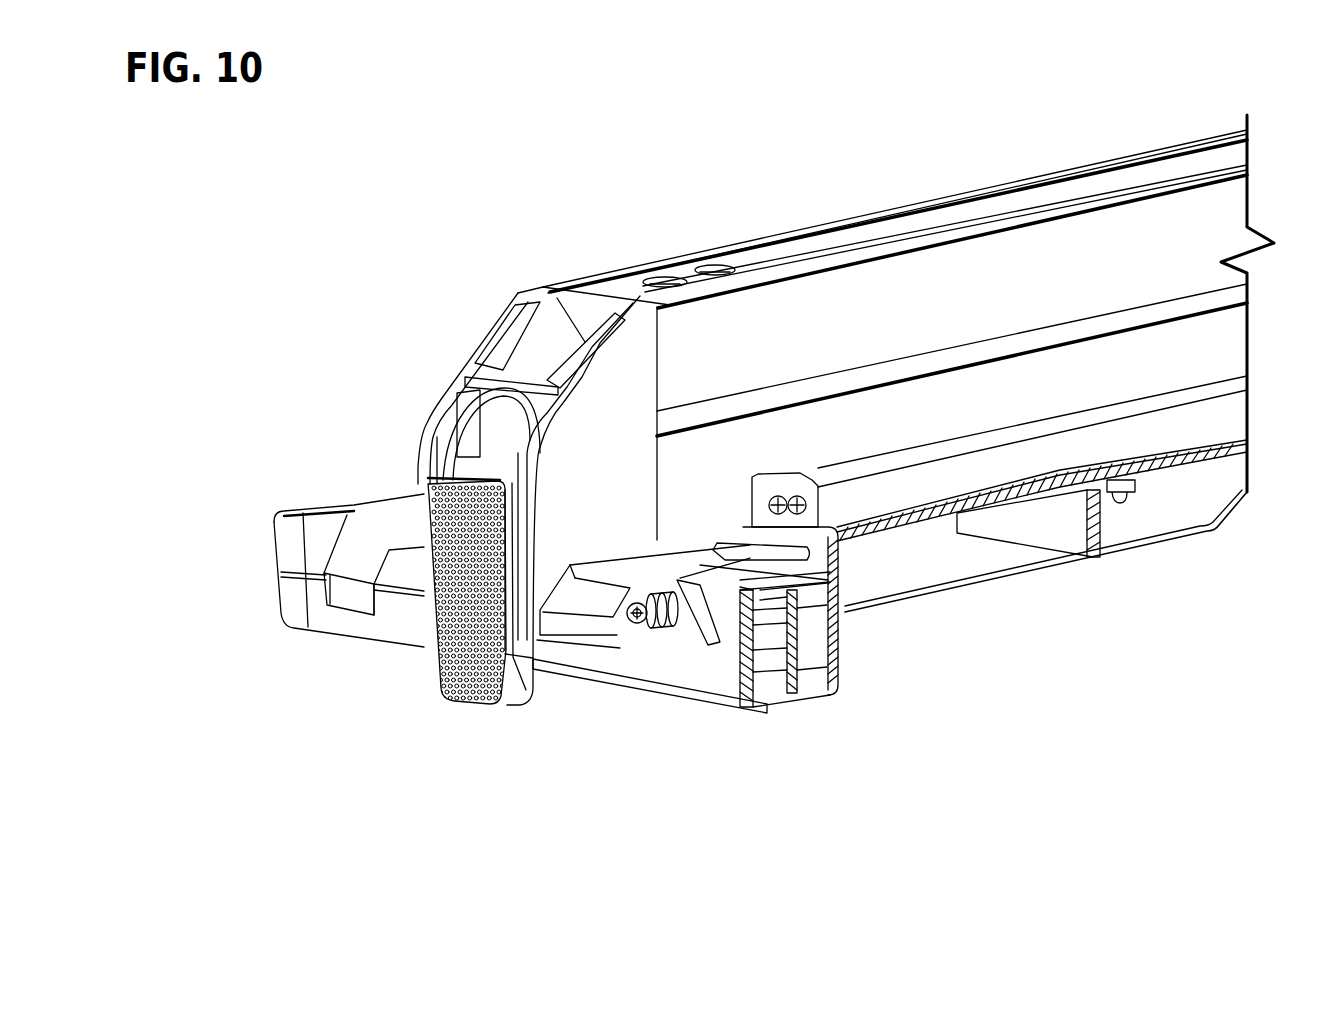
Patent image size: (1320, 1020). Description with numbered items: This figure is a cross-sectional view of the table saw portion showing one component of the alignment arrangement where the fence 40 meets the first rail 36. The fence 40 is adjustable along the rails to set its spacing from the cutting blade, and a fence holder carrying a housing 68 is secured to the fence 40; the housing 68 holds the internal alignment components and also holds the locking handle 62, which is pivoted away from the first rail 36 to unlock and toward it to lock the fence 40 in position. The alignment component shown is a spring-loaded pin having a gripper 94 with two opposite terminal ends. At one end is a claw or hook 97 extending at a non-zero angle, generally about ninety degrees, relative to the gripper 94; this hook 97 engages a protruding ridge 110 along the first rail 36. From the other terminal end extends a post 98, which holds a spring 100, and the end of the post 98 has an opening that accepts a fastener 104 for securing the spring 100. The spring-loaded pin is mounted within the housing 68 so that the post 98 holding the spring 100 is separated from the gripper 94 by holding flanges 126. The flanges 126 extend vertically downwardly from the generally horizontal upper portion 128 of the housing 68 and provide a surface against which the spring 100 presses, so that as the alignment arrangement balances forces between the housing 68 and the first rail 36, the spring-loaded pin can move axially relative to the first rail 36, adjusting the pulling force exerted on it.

The fence 40 is at (1008, 250).
The protruding ridge 110 is at (306, 515).
The housing 68 is at (401, 577).
The locking handle 62 is at (462, 680).
The upper portion 128 is at (663, 563).
The holding flanges 126 is at (692, 597).
The spring 100 is at (657, 585).
The fastener 104 is at (637, 625).
The post 98 is at (660, 624).
The first rail 36 is at (675, 682).
The gripper 94 is at (722, 595).
The hook 97 is at (787, 593).